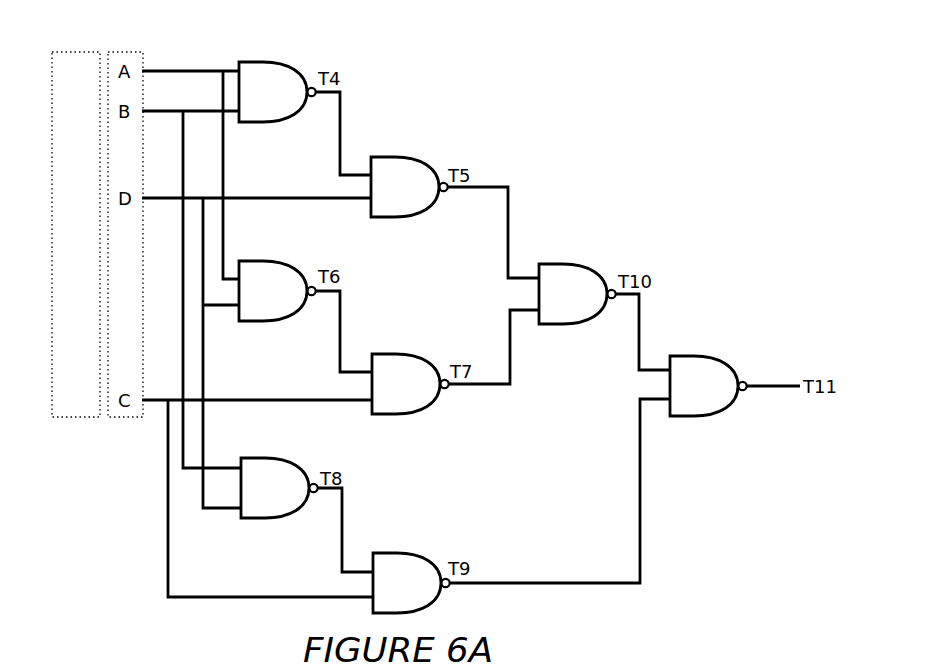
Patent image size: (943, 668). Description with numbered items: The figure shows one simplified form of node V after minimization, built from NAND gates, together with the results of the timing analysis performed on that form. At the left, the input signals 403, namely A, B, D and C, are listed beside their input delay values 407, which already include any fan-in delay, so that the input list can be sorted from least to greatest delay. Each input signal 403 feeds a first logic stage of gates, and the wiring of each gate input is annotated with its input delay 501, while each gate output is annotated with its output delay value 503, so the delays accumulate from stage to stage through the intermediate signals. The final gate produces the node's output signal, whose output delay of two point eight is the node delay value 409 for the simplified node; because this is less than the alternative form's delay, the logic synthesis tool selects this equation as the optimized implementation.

The input delay value 407 is at (75, 52).
The input signal 403 is at (125, 52).
The input delay 501 is at (203, 45).
The output delay value 503 is at (525, 190).
The node delay value 409 is at (775, 360).